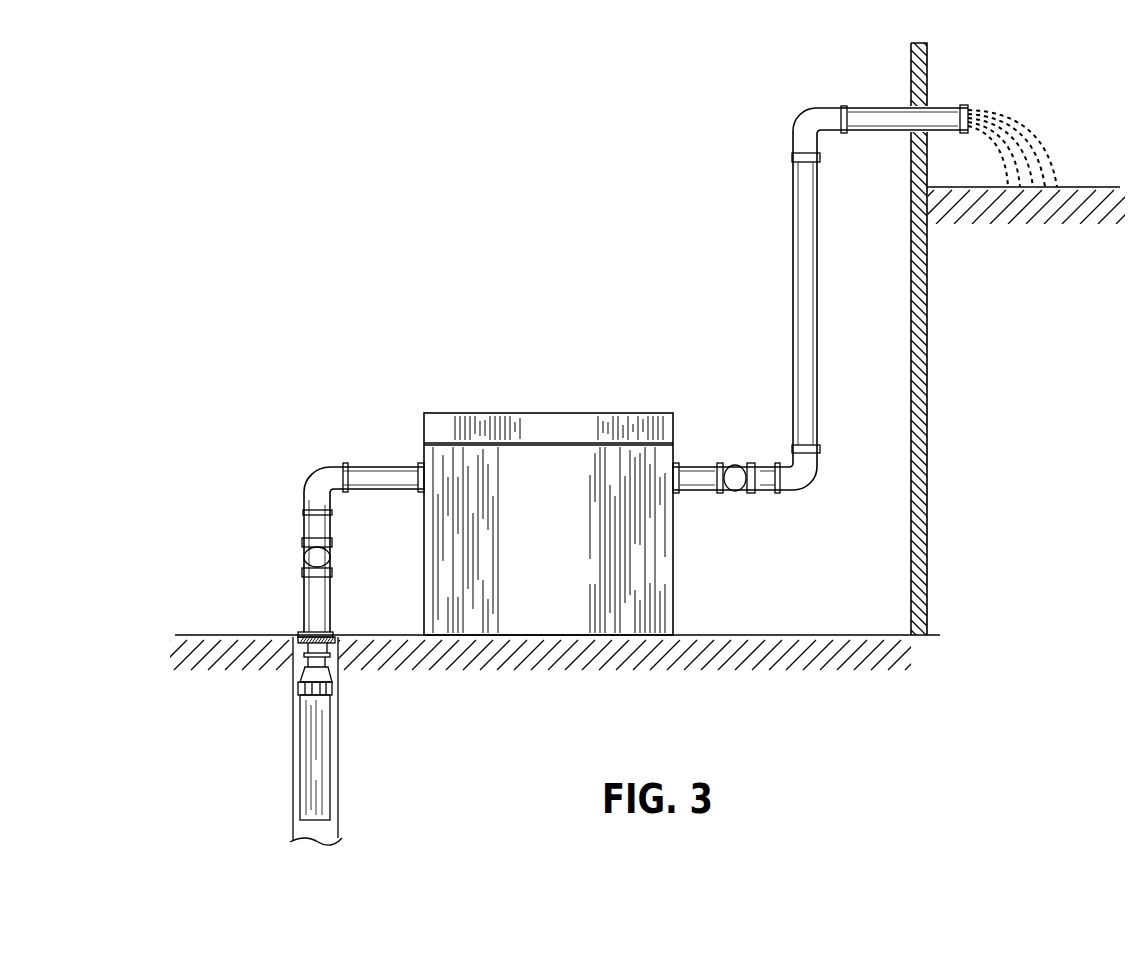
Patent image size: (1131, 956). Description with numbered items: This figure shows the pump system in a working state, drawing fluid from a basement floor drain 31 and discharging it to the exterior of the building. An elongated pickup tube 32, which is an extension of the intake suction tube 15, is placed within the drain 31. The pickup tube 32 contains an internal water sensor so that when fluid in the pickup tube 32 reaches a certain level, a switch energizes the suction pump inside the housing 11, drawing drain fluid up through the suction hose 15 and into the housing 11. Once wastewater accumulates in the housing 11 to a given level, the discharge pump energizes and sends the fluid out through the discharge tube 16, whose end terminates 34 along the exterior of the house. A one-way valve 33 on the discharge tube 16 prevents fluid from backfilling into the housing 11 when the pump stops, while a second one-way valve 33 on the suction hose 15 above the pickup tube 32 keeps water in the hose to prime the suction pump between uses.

The housing 11 is at (673, 573).
The intake suction tube 15 is at (382, 465).
The discharge tube 16 is at (793, 341).
The floor drain 31 is at (298, 631).
The pickup tube 32 is at (313, 730).
The one-way valve 33 is at (302, 557).
The discharge tube termination 34 is at (966, 103).